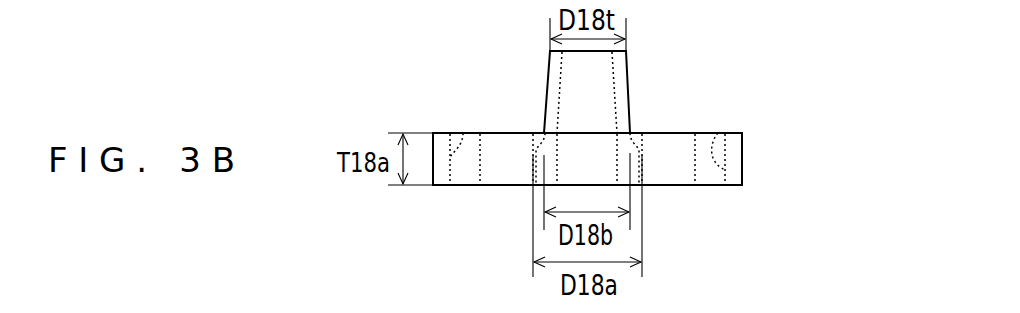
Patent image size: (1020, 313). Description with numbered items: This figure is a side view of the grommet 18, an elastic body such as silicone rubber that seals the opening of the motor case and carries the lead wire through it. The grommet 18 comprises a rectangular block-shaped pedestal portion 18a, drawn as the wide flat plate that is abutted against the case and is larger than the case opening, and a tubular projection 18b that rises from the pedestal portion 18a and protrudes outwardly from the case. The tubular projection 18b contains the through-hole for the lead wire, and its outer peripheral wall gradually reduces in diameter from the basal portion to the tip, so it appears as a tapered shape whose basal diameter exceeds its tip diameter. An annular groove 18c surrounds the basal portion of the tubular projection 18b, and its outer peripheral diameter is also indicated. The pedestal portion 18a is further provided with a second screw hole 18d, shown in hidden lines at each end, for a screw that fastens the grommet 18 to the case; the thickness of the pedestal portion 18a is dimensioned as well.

The grommet 18 is at (772, 146).
The pedestal portion 18a is at (742, 173).
The tubular projection 18b is at (627, 77).
The annular groove 18c is at (542, 133).
The second screw hole 18d is at (458, 133).